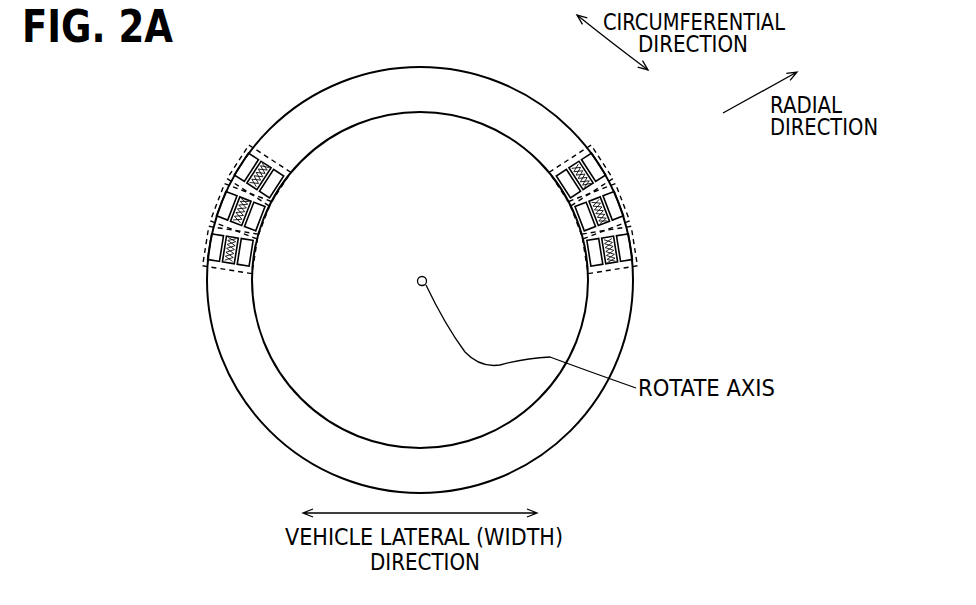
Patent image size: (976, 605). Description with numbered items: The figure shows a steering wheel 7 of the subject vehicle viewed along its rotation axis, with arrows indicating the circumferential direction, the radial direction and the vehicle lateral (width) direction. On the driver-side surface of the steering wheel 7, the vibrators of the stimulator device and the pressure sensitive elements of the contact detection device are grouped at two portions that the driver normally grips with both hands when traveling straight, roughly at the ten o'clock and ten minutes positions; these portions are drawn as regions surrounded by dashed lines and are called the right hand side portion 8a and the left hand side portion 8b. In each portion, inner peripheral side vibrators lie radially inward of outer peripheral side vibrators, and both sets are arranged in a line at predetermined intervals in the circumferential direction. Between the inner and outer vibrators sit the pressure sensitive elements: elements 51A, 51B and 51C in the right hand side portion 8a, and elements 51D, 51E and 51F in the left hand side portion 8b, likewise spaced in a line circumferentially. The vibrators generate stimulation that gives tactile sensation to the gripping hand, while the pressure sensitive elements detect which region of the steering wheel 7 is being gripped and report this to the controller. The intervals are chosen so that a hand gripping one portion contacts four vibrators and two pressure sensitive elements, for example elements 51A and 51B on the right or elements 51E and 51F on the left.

The steering wheel 7 is at (500, 83).
The right hand side portion 8a is at (549, 172).
The left hand side portion 8b is at (291, 172).
The pressure sensitive element 51A is at (575, 163).
The pressure sensitive element 51B is at (604, 223).
The pressure sensitive element 51C is at (612, 263).
The pressure sensitive element 51D is at (228, 263).
The pressure sensitive element 51E is at (237, 223).
The pressure sensitive element 51F is at (265, 163).